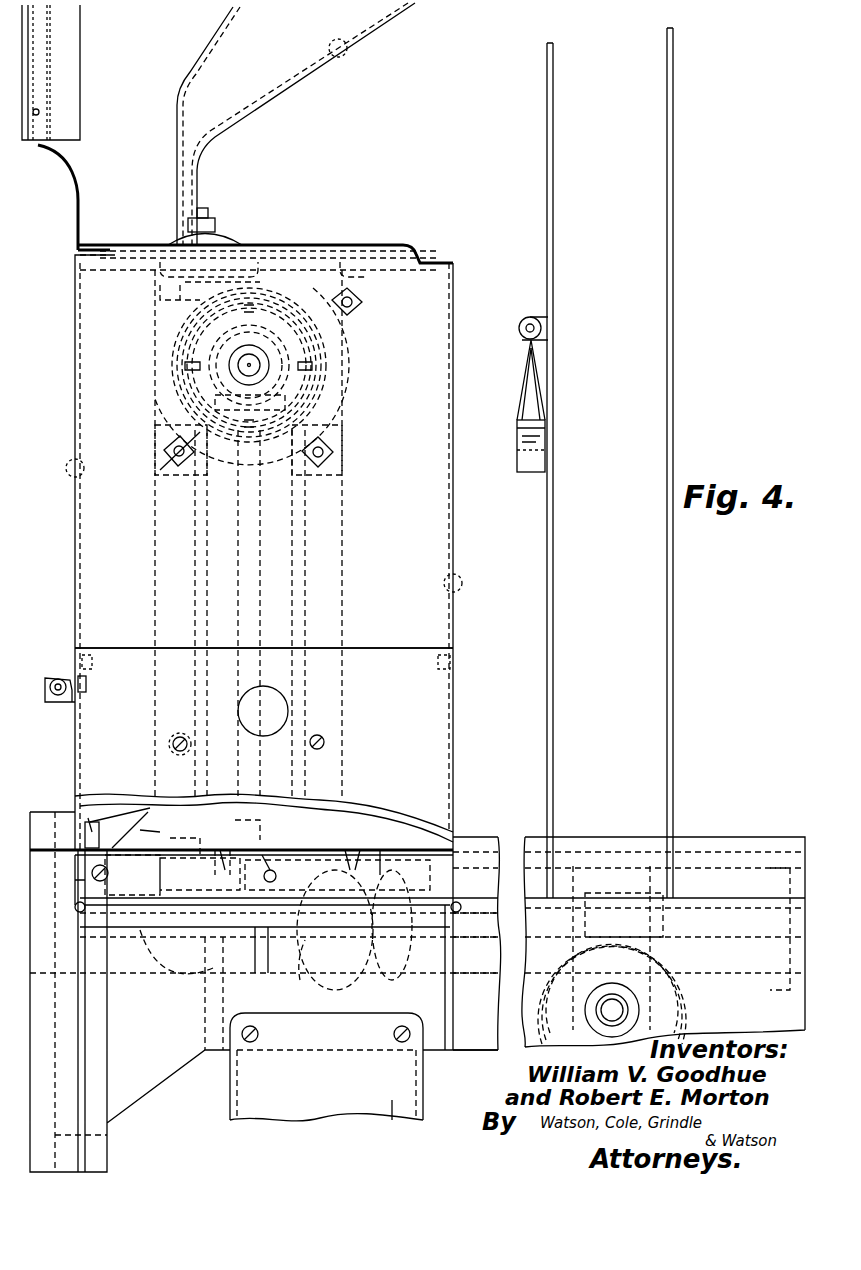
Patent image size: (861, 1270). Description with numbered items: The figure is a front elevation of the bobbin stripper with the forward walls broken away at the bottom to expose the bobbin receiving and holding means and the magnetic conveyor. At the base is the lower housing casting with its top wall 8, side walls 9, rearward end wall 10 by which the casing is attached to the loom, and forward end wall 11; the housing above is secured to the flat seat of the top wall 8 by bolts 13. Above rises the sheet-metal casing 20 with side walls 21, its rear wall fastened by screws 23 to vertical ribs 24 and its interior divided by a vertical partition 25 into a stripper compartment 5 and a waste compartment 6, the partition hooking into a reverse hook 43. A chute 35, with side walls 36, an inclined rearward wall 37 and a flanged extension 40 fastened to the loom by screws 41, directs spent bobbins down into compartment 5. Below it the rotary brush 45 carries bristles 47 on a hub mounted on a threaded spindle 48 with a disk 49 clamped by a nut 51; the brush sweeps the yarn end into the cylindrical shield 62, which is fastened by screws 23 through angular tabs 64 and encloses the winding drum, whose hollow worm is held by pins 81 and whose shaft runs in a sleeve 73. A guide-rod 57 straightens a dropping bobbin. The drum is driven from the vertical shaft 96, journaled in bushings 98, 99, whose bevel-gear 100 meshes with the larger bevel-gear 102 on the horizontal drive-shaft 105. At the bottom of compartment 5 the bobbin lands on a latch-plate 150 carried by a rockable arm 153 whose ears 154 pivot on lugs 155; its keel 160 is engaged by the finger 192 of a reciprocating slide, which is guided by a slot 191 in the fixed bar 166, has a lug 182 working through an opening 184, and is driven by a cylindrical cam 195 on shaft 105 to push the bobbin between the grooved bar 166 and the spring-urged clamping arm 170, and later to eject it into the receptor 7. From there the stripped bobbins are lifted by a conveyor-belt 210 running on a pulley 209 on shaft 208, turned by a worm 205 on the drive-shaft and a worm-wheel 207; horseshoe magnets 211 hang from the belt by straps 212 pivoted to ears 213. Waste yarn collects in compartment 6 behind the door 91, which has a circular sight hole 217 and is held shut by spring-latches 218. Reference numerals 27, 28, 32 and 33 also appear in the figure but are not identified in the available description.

The stripper compartment 5 is at (455, 835).
The compartment 6 is at (428, 820).
The pocket or receptor 7 is at (216, 1101).
The top wall 8 is at (610, 830).
The side walls 9 is at (460, 1038).
The rearward end wall 10 is at (107, 1135).
The forward end wall 11 is at (790, 1000).
The bolts 13 is at (132, 810).
The casing 20 is at (464, 536).
The side walls 21 is at (66, 466).
The screws 23 is at (335, 458).
The vertical ribs 24 is at (155, 585).
The vertical partition 25 is at (398, 812).
The cross bar 27 is at (120, 920).
The pivot pin 28 is at (76, 912).
The plate edge 32 is at (397, 1119).
The screw 33 is at (258, 1034).
The chute 35 is at (254, 129).
The side walls 36 is at (265, 77).
The inclined rearward wall 37 is at (345, 56).
The flanged extension 40 is at (55, 150).
The screws 41 is at (40, 112).
The reverse hook 43 is at (330, 272).
The rotary brush 45 is at (108, 248).
The bristles 47 is at (85, 258).
The screw-threaded spindle 48 is at (205, 212).
The concavo-convex disk 49 is at (228, 240).
The nut 51 is at (215, 222).
The guide-rod 57 is at (160, 470).
The cylindrical guard or shield 62 is at (172, 350).
The angular tabs 64 is at (355, 312).
The sleeve 73 is at (120, 860).
The pins 81 is at (185, 370).
The cover or door 91 is at (440, 690).
The vertical shaft 96 is at (260, 572).
The bushing 98 is at (225, 455).
The bushing 99 is at (268, 826).
The bevel-gear 100 is at (282, 848).
The bevel-gear 102 is at (170, 985).
The drive-shaft 105 is at (262, 975).
The latch-plate or step 150 is at (122, 808).
The rockable arm 153 is at (74, 788).
The ears 154 is at (50, 678).
The lugs 155 is at (86, 684).
The keel-like projection 160 is at (160, 812).
The bar 166 is at (80, 888).
The clamping arm 170 is at (355, 850).
The lug 182 is at (362, 955).
The opening 184 is at (330, 975).
The slot or recess 191 is at (222, 845).
The finger 192 is at (176, 845).
The cylindrical cam 195 is at (308, 972).
The worm 205 is at (650, 893).
The worm-wheel 207 is at (684, 1012).
The shaft 208 is at (612, 1010).
The pulley 209 is at (678, 1000).
The conveyor-belt 210 is at (672, 660).
The permanent magnets 211 is at (537, 472).
The straps 212 is at (519, 400).
The ears 213 is at (538, 318).
The circular hole 217 is at (265, 692).
The spring-latches 218 is at (92, 662).